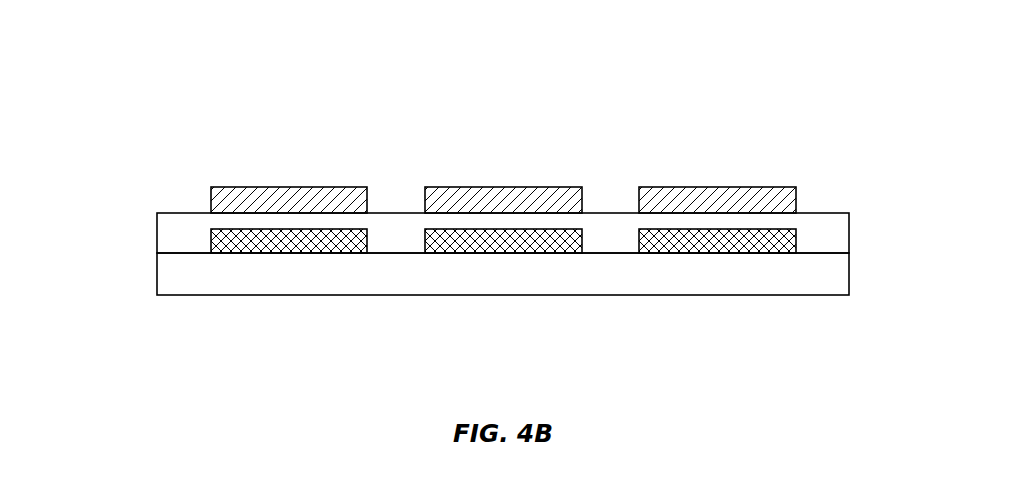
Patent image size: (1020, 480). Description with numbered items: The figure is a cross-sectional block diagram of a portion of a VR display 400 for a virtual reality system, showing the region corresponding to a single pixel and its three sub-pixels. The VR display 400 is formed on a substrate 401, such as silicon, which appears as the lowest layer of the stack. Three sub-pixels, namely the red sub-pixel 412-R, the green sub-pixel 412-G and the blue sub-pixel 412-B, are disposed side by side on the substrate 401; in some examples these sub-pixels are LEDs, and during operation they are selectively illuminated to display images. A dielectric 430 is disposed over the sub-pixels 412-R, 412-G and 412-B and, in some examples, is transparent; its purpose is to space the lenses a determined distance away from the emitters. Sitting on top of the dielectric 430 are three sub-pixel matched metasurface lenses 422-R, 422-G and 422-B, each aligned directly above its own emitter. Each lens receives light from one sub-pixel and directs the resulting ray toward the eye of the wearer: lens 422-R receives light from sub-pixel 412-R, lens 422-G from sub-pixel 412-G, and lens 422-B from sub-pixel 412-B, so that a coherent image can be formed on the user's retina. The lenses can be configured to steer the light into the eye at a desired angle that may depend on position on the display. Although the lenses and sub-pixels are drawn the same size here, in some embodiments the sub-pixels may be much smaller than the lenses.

The VR display 400 is at (197, 56).
The substrate 401 is at (565, 283).
The dielectric 430 is at (610, 229).
The red sub-pixel 412-R is at (211, 229).
The green sub-pixel 412-G is at (450, 245).
The blue sub-pixel 412-B is at (763, 227).
The sub-pixel matched metasurface lens 422-R is at (253, 188).
The sub-pixel matched metasurface lens 422-G is at (557, 168).
The sub-pixel matched metasurface lens 422-B is at (771, 139).